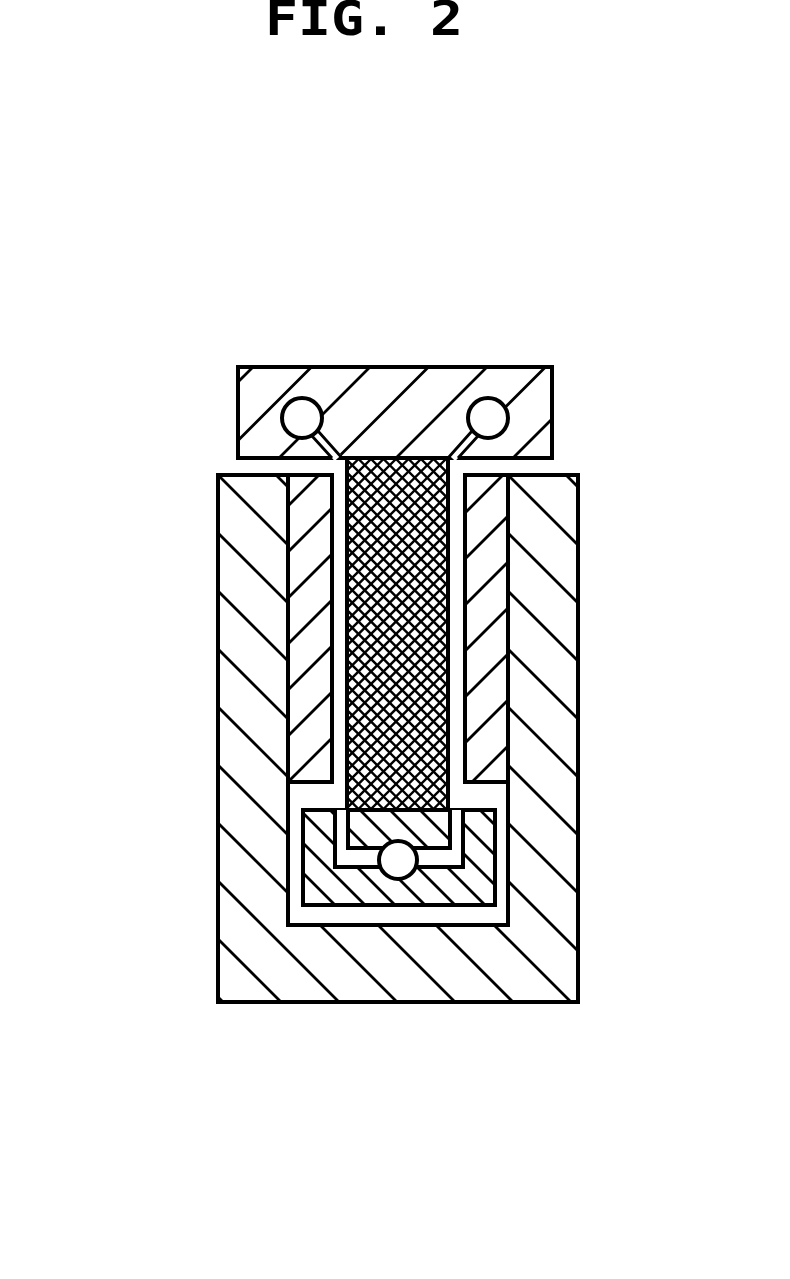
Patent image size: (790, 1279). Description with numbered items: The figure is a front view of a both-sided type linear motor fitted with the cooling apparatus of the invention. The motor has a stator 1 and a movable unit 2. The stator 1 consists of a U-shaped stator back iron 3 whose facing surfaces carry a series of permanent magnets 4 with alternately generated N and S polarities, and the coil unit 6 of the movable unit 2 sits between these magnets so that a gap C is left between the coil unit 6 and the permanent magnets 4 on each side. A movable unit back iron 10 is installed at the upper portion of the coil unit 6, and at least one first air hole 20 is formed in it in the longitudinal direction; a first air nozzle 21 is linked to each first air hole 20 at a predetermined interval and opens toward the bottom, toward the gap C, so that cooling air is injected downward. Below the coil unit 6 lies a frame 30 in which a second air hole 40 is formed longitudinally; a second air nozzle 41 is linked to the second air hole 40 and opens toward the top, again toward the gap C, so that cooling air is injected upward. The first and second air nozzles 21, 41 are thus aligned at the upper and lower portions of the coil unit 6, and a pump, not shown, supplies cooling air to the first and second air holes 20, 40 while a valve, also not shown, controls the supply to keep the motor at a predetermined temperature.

The stator 1 is at (202, 785).
The movable unit 2 is at (304, 341).
The stator back iron 3 is at (563, 778).
The permanent magnets 4 is at (313, 692).
The coil unit 6 is at (400, 500).
The movable unit back iron 10 is at (445, 383).
The first air hole 20 is at (295, 420).
The first air nozzle 21 is at (325, 505).
The gap C is at (338, 595).
The frame 30 is at (445, 890).
The second air hole 40 is at (403, 868).
The second air nozzle 41 is at (338, 838).